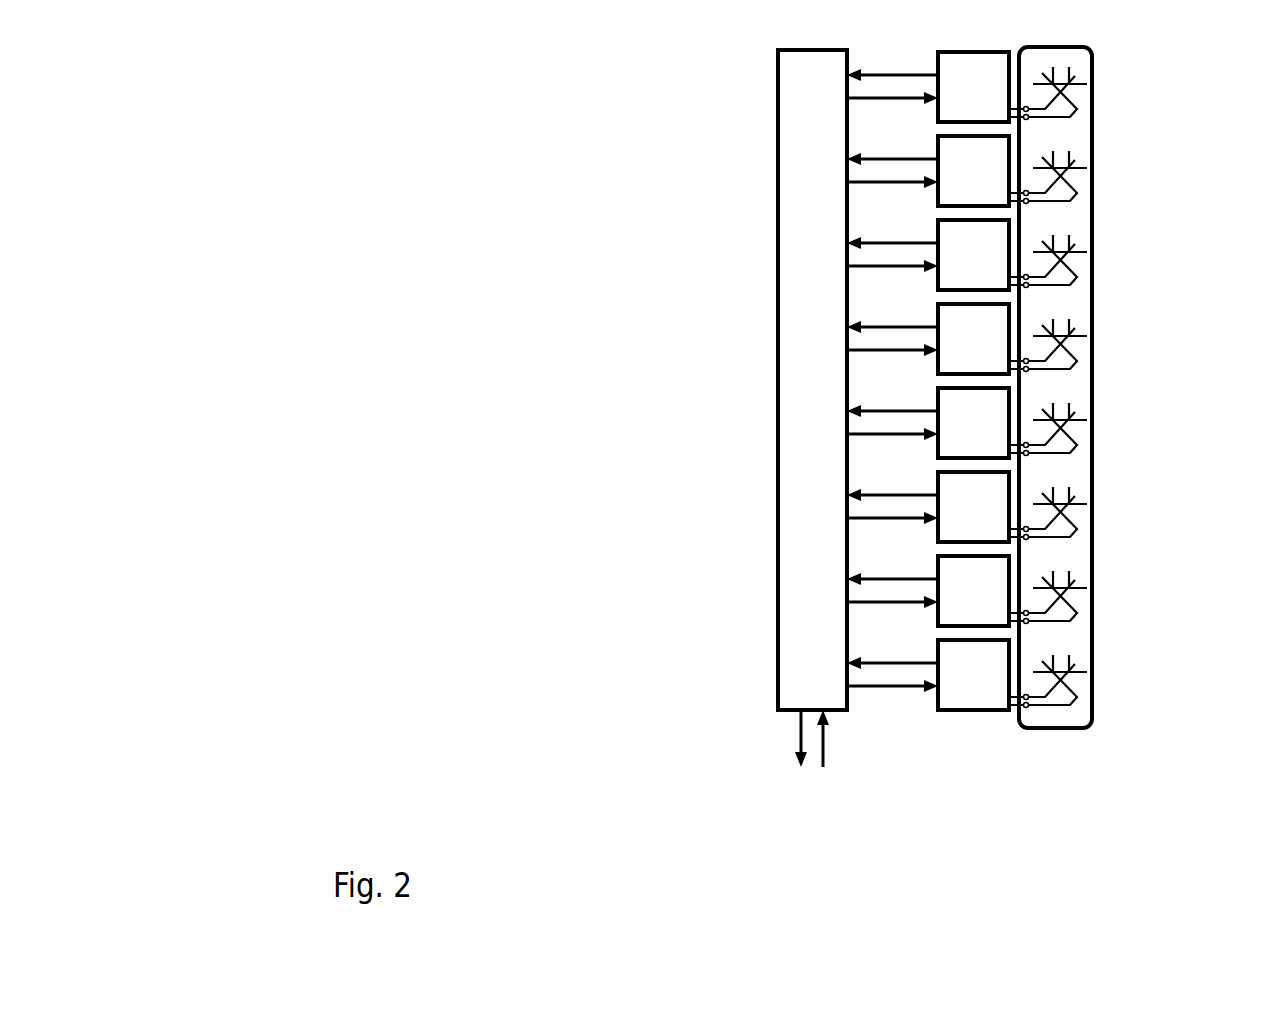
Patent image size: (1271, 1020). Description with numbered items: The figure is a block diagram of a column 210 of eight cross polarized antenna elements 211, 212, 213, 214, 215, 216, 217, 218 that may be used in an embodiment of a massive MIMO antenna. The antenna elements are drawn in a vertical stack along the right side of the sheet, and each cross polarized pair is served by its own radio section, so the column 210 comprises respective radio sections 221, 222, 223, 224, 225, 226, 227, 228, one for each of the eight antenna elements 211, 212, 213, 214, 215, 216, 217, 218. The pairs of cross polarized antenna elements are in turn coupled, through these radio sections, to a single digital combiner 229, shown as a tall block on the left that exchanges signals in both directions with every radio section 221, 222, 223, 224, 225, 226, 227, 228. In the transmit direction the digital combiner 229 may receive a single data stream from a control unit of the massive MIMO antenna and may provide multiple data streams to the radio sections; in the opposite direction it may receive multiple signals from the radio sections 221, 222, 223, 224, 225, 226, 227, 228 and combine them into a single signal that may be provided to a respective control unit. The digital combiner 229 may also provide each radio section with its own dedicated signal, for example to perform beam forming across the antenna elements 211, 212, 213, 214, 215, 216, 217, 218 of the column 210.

The column 210 is at (590, 803).
The cross polarized antenna element 211 is at (1087, 84).
The cross polarized antenna element 212 is at (1087, 168).
The cross polarized antenna element 213 is at (1087, 252).
The cross polarized antenna element 214 is at (1087, 336).
The cross polarized antenna element 215 is at (1087, 420).
The cross polarized antenna element 216 is at (1087, 504).
The cross polarized antenna element 217 is at (1087, 588).
The cross polarized antenna element 218 is at (1087, 672).
The radio section 221 is at (938, 52).
The radio section 222 is at (938, 136).
The radio section 223 is at (938, 220).
The radio section 224 is at (938, 304).
The radio section 225 is at (938, 388).
The radio section 226 is at (938, 472).
The radio section 227 is at (938, 556).
The radio section 228 is at (938, 640).
The digital combiner 229 is at (778, 128).